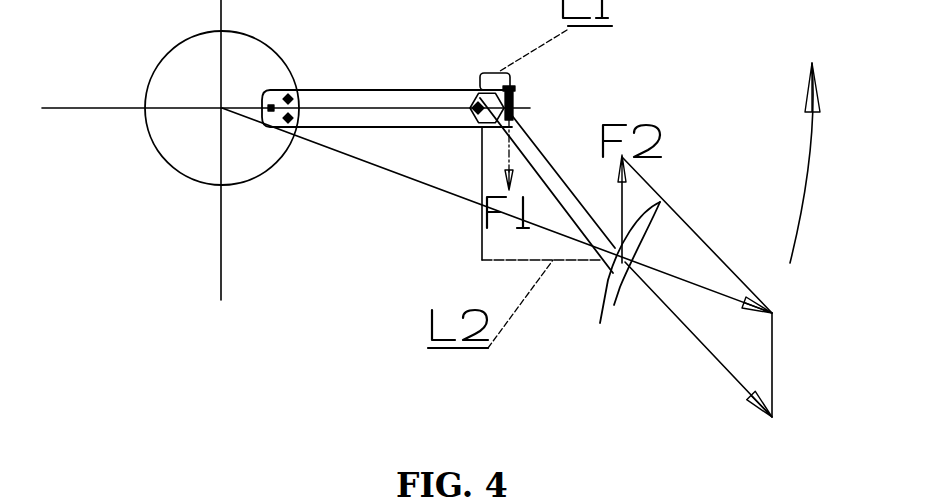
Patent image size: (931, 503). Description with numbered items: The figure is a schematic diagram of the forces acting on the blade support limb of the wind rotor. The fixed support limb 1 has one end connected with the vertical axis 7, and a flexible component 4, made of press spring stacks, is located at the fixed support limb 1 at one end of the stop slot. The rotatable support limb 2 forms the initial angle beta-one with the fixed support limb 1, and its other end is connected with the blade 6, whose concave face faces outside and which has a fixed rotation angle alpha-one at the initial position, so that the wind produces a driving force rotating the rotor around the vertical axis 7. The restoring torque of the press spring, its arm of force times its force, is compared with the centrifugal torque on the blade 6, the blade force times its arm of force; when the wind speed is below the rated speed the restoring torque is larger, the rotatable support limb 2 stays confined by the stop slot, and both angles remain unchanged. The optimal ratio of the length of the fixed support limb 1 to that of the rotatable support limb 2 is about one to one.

The vertical axis 7 is at (257, 53).
The fixed support limb 1 is at (397, 96).
The flexible component 4 is at (516, 98).
The rotatable support limb 2 is at (556, 160).
The blade 6 is at (616, 310).